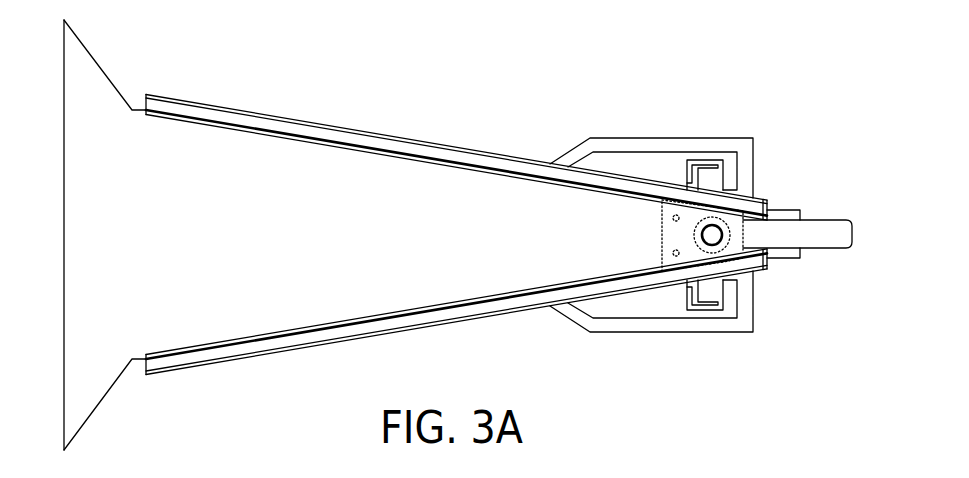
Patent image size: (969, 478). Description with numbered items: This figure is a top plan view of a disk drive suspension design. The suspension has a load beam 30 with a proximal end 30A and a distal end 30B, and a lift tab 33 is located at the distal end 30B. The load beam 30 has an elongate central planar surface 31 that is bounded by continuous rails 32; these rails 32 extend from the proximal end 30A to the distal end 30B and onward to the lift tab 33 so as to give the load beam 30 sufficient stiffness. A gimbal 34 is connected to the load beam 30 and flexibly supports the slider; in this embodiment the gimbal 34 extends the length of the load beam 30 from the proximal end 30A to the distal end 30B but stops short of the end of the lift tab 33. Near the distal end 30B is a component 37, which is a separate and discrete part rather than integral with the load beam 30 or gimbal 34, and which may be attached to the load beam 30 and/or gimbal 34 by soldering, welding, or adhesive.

The load beam 30 is at (368, 127).
The proximal end 30A is at (62, 218).
The distal end 30B is at (777, 192).
The elongate central planar surface 31 is at (230, 227).
The continuous rails 32 is at (292, 118).
The lift tab 33 is at (852, 227).
The gimbal 34 is at (673, 332).
The component 37 is at (662, 230).